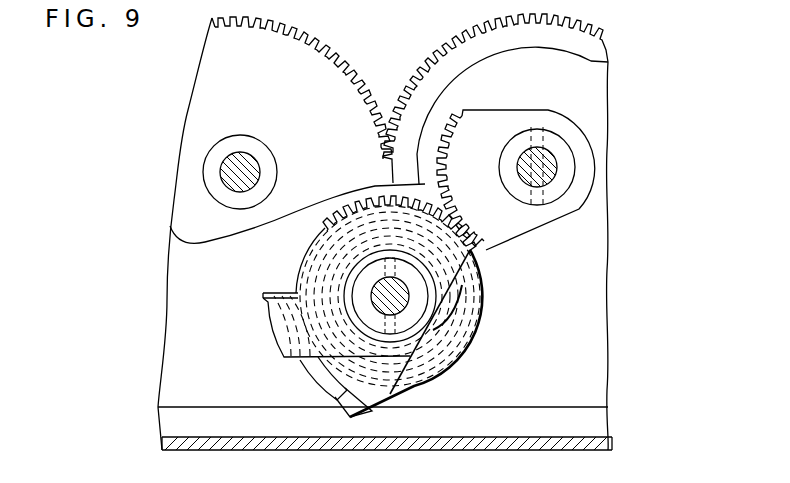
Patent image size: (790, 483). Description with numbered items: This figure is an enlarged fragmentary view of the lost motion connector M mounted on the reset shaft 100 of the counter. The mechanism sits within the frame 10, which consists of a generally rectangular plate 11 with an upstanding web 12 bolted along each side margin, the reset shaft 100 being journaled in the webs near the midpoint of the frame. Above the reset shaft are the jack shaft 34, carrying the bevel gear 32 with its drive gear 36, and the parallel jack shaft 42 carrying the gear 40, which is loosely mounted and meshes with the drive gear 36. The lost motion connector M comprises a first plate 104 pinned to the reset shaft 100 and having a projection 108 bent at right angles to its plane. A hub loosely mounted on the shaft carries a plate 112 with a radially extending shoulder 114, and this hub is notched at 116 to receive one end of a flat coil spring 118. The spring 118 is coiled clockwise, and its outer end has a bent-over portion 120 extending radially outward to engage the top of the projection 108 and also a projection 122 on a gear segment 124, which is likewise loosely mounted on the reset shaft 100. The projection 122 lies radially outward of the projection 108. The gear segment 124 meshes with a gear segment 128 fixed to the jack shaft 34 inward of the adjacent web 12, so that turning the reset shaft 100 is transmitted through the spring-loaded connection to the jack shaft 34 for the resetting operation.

The frame 10 is at (370, 46).
The plate 11 is at (610, 427).
The upstanding web 12 is at (598, 284).
The bevel gear 32 is at (604, 60).
The jack shaft 34 is at (555, 158).
The drive gear 36 is at (454, 33).
The gear 40 is at (332, 46).
The jack shaft 42 is at (252, 160).
The reset shaft 100 is at (408, 297).
The first plate 104 is at (306, 367).
The projection 108 is at (318, 380).
The plate 112 is at (412, 390).
The shoulder 114 is at (365, 413).
The notch 116 is at (335, 262).
The flat coil spring 118 is at (466, 362).
The bent-over portion 120 is at (264, 294).
The projection 122 is at (266, 322).
The gear segment 124 is at (357, 197).
The gear segment 128 is at (464, 112).
The lost motion connector M is at (479, 337).